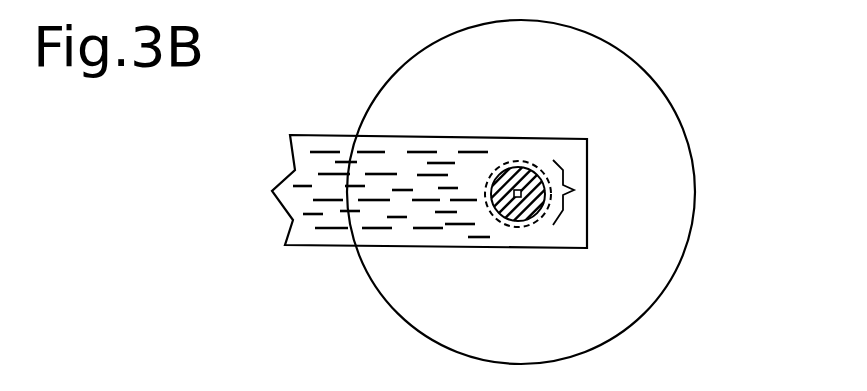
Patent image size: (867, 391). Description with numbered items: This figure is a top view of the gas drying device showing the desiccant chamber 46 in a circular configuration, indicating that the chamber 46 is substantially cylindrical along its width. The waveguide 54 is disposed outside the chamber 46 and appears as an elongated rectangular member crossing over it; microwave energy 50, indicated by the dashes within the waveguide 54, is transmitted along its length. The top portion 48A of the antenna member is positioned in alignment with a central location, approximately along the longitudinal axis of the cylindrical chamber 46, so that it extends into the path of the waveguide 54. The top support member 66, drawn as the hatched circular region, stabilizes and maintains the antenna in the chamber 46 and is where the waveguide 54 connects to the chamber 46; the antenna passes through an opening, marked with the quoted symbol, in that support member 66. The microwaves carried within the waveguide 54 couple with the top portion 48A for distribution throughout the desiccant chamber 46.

The desiccant chamber 46 is at (630, 58).
The top portion of the antenna member 48A is at (516, 188).
The microwave energy 50 is at (333, 150).
The waveguide 54 is at (337, 246).
The top support member 66 is at (515, 227).